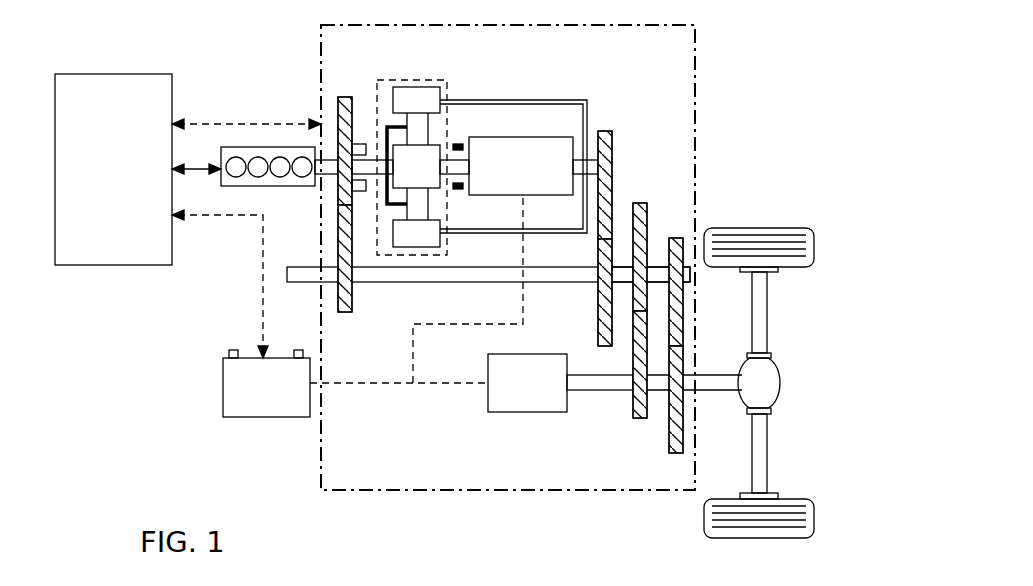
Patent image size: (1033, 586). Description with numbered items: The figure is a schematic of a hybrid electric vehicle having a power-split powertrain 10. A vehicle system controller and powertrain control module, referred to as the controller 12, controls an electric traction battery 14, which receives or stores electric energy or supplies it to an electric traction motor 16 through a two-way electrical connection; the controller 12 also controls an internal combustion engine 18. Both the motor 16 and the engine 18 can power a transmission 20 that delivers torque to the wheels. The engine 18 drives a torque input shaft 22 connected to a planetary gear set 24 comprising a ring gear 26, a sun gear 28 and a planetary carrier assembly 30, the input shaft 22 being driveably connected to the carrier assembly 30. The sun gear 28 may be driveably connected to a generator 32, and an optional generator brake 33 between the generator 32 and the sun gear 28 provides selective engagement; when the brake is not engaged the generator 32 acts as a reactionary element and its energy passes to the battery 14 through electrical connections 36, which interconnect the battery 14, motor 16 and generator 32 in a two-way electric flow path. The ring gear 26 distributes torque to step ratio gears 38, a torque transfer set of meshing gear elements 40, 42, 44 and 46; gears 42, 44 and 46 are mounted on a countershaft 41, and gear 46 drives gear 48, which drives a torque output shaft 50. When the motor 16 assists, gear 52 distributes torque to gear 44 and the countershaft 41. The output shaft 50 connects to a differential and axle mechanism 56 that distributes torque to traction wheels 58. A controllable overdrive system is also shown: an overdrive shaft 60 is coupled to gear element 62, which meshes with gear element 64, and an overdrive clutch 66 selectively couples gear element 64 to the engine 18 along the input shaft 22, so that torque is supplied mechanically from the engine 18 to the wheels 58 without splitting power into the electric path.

The power-split powertrain 10 is at (238, 54).
The controller 12 is at (117, 249).
The electric traction battery 14 is at (268, 401).
The electric traction motor 16 is at (523, 393).
The internal combustion engine 18 is at (280, 187).
The transmission 20 is at (698, 85).
The torque input shaft 22 is at (375, 175).
The planetary gear set 24 is at (415, 148).
The ring gear 26 is at (416, 167).
The sun gear 28 is at (416, 166).
The planetary carrier assembly 30 is at (388, 126).
The generator 32 is at (530, 137).
The generator brake 33 is at (460, 138).
The electrical connections 36 is at (385, 383).
The step ratio gears 38 is at (649, 136).
The gear element 40 is at (603, 130).
The countershaft 41 is at (653, 268).
The gear element 42 is at (597, 302).
The gear element 44 is at (638, 203).
The gear element 46 is at (683, 275).
The gear 48 is at (668, 437).
The torque output shaft 50 is at (713, 383).
The gear 52 is at (633, 403).
The differential and axle mechanism 56 is at (771, 380).
The traction wheels 58 is at (762, 236).
The overdrive shaft 60 is at (408, 273).
The gear element 62 is at (339, 100).
The gear element 64 is at (343, 313).
The overdrive clutch 66 is at (362, 143).